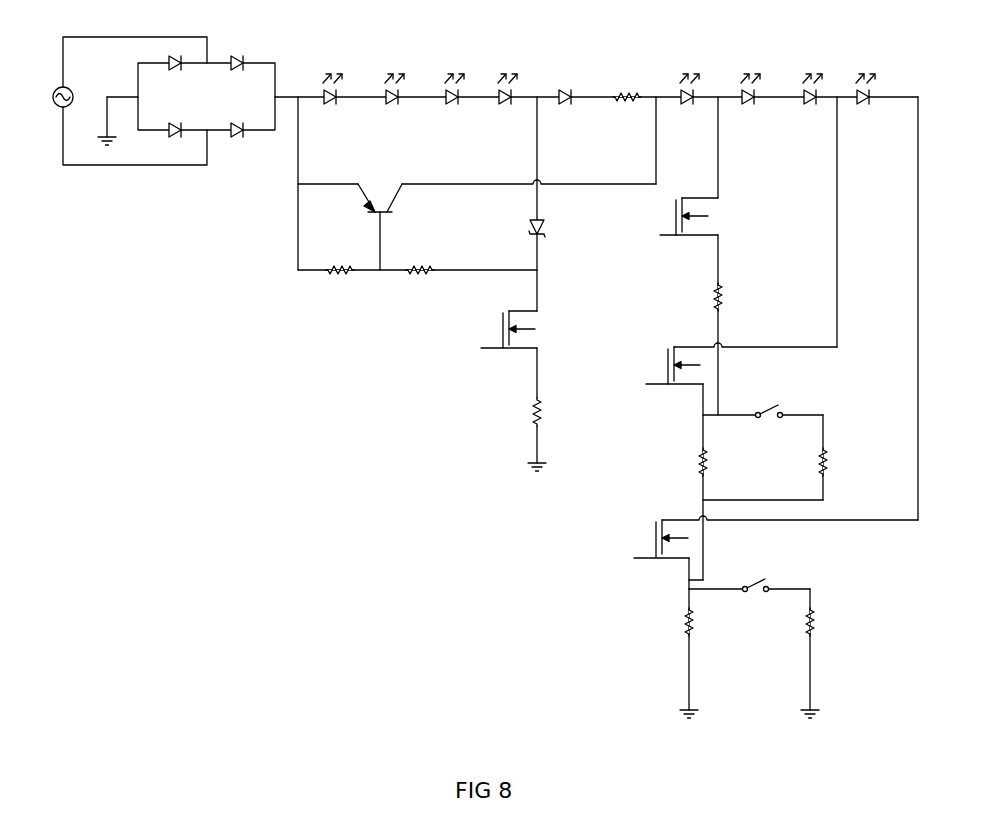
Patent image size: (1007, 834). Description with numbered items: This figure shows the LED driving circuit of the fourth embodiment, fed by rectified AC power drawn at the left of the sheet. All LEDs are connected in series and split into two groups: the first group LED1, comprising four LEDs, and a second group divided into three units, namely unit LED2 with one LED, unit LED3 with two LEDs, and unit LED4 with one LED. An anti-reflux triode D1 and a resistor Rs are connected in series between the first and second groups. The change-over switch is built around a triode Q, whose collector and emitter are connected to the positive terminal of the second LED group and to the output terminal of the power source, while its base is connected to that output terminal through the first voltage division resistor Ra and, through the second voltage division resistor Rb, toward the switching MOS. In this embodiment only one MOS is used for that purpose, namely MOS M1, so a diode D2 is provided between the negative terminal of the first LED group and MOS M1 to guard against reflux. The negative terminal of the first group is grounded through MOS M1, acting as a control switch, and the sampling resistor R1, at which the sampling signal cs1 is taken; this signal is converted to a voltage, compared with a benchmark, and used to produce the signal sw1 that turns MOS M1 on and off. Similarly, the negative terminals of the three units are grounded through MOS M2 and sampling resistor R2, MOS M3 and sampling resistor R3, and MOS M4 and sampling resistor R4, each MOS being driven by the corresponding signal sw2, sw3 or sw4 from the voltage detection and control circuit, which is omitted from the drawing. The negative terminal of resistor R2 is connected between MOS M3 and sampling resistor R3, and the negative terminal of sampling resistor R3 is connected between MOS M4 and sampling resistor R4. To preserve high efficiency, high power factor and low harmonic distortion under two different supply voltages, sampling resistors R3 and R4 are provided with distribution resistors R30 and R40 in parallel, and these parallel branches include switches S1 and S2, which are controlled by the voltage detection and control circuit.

The first LED group LED1 is at (420, 64).
The LED unit LED2 is at (695, 67).
The LED unit LED3 is at (781, 65).
The LED unit LED4 is at (875, 64).
The anti-reflux triode D1 is at (573, 83).
The diode D2 is at (556, 225).
The resistor Rs is at (627, 82).
The triode Q is at (477, 208).
The first voltage division resistor Ra is at (340, 285).
The second voltage division resistor Rb is at (421, 285).
The MOS M1 is at (532, 329).
The signal sw1 is at (471, 332).
The sampling signal cs1 is at (562, 373).
The sampling resistor R1 is at (556, 434).
The MOS M2 is at (713, 216).
The signal sw2 is at (649, 219).
The sampling resistor R2 is at (739, 325).
The MOS M3 is at (741, 380).
The signal sw3 is at (641, 365).
The switch S1 is at (763, 401).
The sampling resistor R3 is at (721, 457).
The distribution resistor R30 is at (789, 457).
The MOS M4 is at (776, 553).
The signal sw4 is at (631, 539).
The switch S2 is at (749, 573).
The sampling resistor R4 is at (706, 653).
The distribution resistor R40 is at (833, 653).